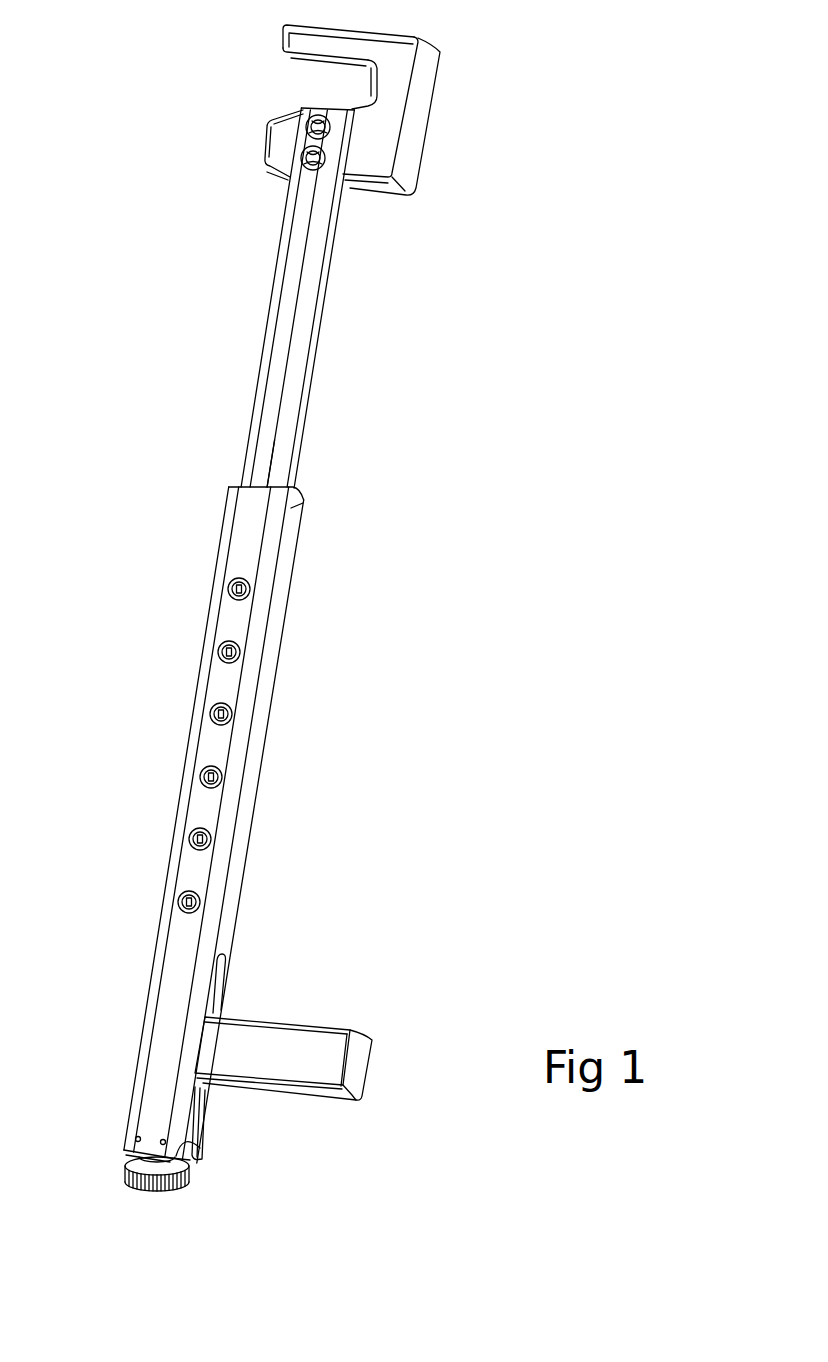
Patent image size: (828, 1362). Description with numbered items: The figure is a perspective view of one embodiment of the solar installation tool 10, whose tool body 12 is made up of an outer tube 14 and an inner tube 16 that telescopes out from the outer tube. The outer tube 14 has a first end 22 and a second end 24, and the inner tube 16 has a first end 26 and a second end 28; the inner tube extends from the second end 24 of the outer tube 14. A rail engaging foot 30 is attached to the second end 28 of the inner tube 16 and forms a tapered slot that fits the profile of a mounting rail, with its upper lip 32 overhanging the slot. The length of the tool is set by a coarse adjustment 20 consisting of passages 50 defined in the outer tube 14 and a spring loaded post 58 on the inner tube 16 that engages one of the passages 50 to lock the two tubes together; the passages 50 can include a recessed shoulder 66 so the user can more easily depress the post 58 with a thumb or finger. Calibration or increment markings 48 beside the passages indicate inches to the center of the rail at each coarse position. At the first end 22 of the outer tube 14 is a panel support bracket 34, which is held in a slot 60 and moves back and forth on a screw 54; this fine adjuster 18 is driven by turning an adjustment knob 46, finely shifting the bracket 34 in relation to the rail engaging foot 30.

The solar installation tool 10 is at (594, 293).
The tool body 12 is at (331, 761).
The outer tube 14 is at (247, 523).
The inner tube 16 is at (314, 293).
The fine adjuster 18 is at (128, 1168).
The coarse adjustment 20 is at (217, 708).
The first end of the outer tube 22 is at (133, 1120).
The second end of the outer tube 24 is at (300, 510).
The first end of the inner tube 26 is at (285, 473).
The second end of the inner tube 28 is at (266, 133).
The rail engaging foot 30 is at (393, 143).
The top arm of hook 32 is at (300, 82).
The panel support bracket 34 is at (317, 1047).
The adjustment knob 46 is at (163, 1185).
The calibration or increment markings 48 is at (238, 624).
The passages 50 is at (204, 779).
The screw 54 is at (200, 1150).
The spring loaded post 58 is at (232, 586).
The slot 60 is at (210, 1105).
The recessed shoulder 66 is at (200, 838).